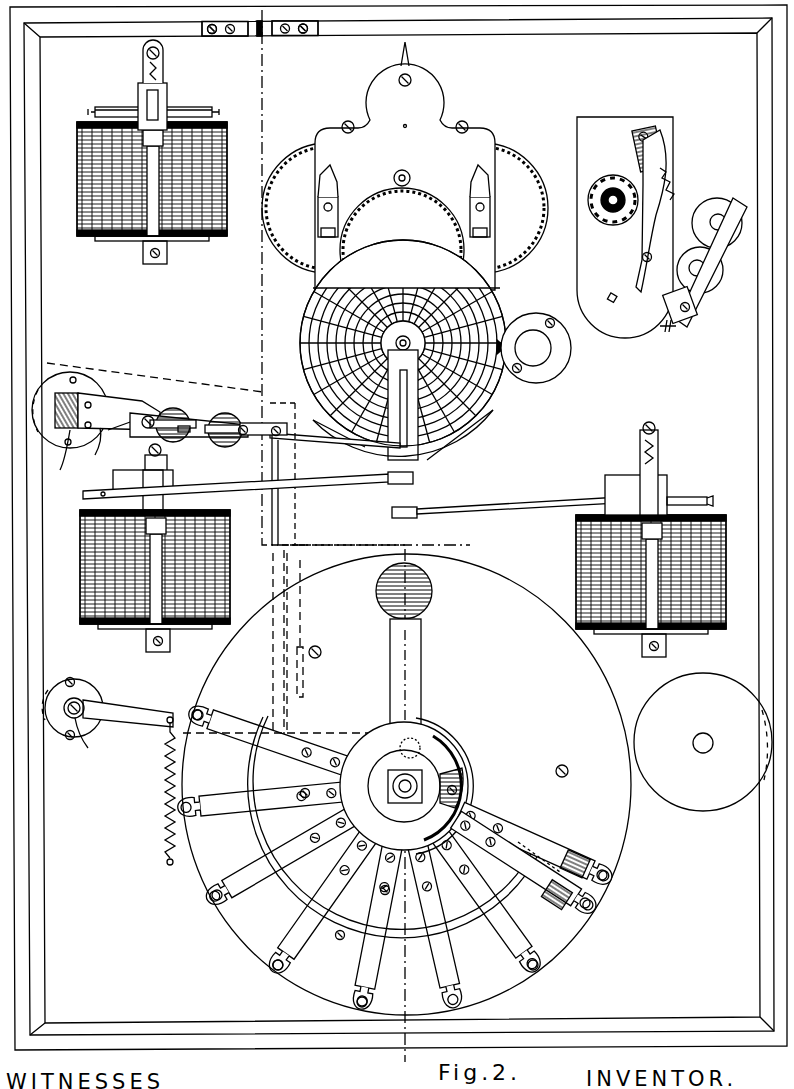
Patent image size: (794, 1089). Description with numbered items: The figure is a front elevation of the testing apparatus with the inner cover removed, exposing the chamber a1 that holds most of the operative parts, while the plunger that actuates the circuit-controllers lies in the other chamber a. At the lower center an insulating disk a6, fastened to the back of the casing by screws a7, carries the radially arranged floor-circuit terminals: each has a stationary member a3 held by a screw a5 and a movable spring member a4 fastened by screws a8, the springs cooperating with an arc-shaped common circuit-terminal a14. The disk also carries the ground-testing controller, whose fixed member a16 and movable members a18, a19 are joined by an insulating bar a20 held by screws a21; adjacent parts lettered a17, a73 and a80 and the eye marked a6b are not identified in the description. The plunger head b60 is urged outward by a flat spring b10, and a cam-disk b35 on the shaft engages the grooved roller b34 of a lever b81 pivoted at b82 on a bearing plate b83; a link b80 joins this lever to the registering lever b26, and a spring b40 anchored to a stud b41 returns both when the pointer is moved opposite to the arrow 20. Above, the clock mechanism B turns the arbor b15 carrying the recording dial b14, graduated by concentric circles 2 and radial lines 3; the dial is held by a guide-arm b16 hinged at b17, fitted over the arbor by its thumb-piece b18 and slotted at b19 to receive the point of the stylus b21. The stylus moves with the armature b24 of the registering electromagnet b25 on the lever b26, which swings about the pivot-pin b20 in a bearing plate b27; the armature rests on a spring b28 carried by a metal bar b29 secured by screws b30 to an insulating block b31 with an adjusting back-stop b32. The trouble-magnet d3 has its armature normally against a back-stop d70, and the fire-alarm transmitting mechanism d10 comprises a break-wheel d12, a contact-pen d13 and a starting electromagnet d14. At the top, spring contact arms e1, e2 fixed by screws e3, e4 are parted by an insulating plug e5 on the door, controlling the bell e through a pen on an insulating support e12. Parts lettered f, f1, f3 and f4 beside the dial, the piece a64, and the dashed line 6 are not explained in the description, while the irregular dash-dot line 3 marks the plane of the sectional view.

The radial lines 3 is at (262, 18).
The screw e4 is at (212, 36).
The spring contact-arm e2 is at (255, 37).
The insulating plug e5 is at (259, 40).
The spring contact-arm e1 is at (272, 37).
The screw e3 is at (303, 36).
The insulating disk a6 is at (220, 240).
The armature bracket a64 is at (188, 110).
The clock mechanism B is at (483, 126).
The fire-alarm-transmitting mechanism d10 is at (580, 137).
The break-wheel d12 is at (600, 180).
The contact-pen d13 is at (660, 145).
The starting-magnet d14 is at (712, 194).
The recording dial b14 is at (490, 305).
The contact disc f1 is at (528, 318).
The contact hub f is at (555, 342).
The contact screw f4 is at (550, 330).
The contact screw f3 is at (518, 376).
The arbor b15 is at (360, 346).
The thumb-piece b18 is at (403, 320).
The guide-arm b16 is at (415, 430).
The slot b19 is at (440, 420).
The hinge b17 is at (380, 458).
The concentric circles 2 is at (460, 380).
The section line 6- 6 is at (169, 371).
The stylus b21 is at (300, 445).
The insulating-block b31 is at (76, 378).
The bearing-plate b27 is at (100, 398).
The pivot-pin b20 is at (85, 400).
The registering electromagnet b25 is at (172, 406).
The lever b26 is at (228, 411).
The armature b24 is at (198, 420).
The spring b28 is at (190, 440).
The metal bar b29 is at (100, 440).
The screws b30 is at (62, 445).
The back-stop b32 is at (142, 445).
The chamber a is at (82, 560).
The chamber a1 is at (240, 487).
The link b80 is at (275, 546).
The movable member a4 is at (500, 508).
The trouble-magnet d3 is at (688, 564).
The back-stop d70 is at (656, 480).
The common circuit-terminal a14 is at (258, 778).
The arrow 20 is at (316, 628).
The head b60 is at (432, 600).
The flat spring b10 is at (421, 666).
The cam-disk b35 is at (380, 740).
The grooved roller b34 is at (425, 740).
The insulating support e12 is at (466, 784).
The movable member a19 is at (516, 826).
The movable member a18 is at (536, 880).
The insulating bar a20 is at (578, 852).
The slide block a80 is at (548, 845).
The slide guide a73 is at (540, 876).
The arm eye a17 is at (602, 870).
The fixed member a16 is at (586, 910).
The screws a21 is at (548, 926).
The stationary member a3 is at (202, 712).
The screw a5 is at (290, 968).
The arm eye a6b is at (215, 905).
The screws a8 is at (300, 790).
The screws a7 is at (560, 768).
The lever b81 is at (142, 710).
The pivot b82 is at (92, 740).
The bearing plate b83 is at (60, 740).
The spring b40 is at (165, 800).
The stud b41 is at (165, 862).
The bell e is at (686, 808).